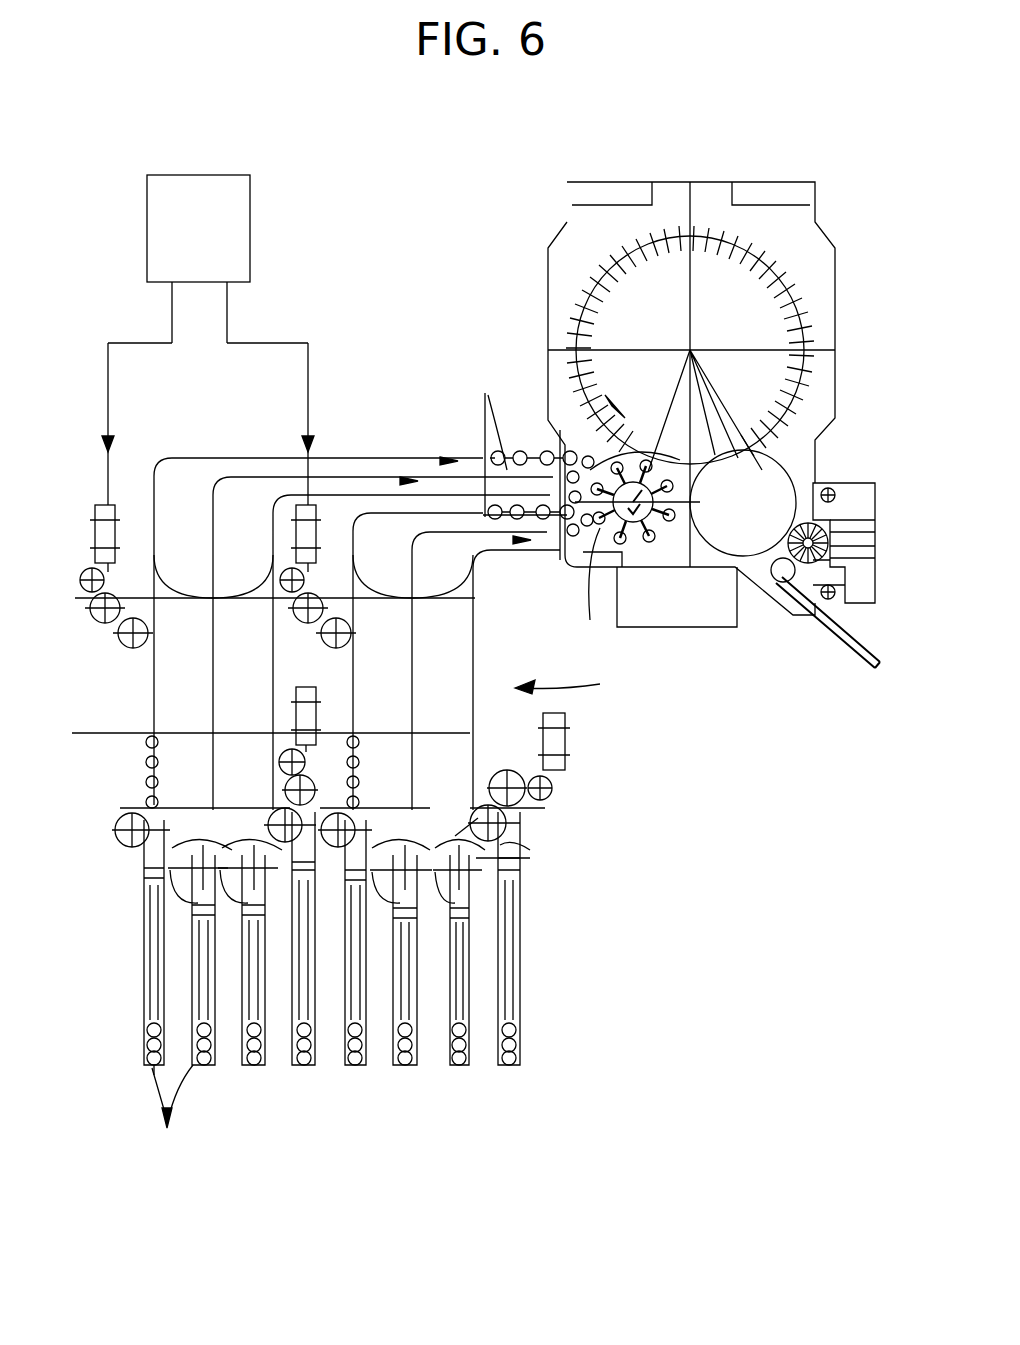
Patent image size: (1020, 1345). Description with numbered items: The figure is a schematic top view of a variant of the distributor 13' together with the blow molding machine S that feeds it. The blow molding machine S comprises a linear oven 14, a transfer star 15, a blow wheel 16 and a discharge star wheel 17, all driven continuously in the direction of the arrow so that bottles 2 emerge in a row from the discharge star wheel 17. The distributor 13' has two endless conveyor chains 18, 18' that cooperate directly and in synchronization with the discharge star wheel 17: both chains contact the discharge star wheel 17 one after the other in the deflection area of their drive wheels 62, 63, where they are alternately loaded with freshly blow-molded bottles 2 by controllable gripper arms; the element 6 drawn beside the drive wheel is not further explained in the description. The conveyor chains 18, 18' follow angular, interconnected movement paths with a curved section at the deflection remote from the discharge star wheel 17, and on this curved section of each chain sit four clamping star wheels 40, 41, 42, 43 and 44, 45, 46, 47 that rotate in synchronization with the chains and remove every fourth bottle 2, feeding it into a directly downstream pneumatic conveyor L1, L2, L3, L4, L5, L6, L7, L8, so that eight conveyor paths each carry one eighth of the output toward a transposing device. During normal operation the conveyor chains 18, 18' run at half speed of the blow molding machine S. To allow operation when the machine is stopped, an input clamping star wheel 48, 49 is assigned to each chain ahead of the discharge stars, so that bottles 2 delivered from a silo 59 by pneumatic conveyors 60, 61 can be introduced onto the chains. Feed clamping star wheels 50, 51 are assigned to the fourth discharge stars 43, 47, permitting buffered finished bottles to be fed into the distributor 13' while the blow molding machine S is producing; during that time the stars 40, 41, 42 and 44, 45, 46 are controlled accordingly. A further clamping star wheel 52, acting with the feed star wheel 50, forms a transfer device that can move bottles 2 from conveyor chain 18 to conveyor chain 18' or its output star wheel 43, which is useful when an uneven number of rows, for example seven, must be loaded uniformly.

The blow molding machine S is at (824, 156).
The bottles 2 is at (485, 430).
The rotor 6 is at (587, 589).
The distributor 13' is at (576, 684).
The linear oven 14 is at (842, 603).
The transfer star 15 is at (810, 455).
The blow wheel 16 is at (658, 236).
The discharge star wheel 17 is at (643, 567).
The conveyor chain 18 is at (316, 633).
The conveyor chain 18' is at (272, 632).
The clamping star wheel 40 is at (116, 840).
The clamping star wheel 41 is at (180, 880).
The clamping star wheel 42 is at (215, 915).
The clamping star wheel 43 is at (272, 812).
The clamping star wheel 44 is at (460, 820).
The clamping star wheel 45 is at (395, 908).
The clamping star wheel 46 is at (440, 905).
The clamping star wheel 47 is at (527, 857).
The input clamping star wheel 48 is at (135, 648).
The input clamping star wheel 49 is at (338, 646).
The feed clamping star wheel 50 is at (290, 782).
The feed clamping star wheel 51 is at (507, 770).
The clamping star wheel 52 is at (330, 742).
The silo 59 is at (172, 195).
The pneumatic conveyor 60 is at (108, 400).
The pneumatic conveyor 61 is at (308, 392).
The drive wheel 62 is at (560, 536).
The drive wheel 63 is at (548, 456).
The pneumatic conveyor L1 is at (140, 1065).
The pneumatic conveyor L2 is at (203, 1065).
The pneumatic conveyor L3 is at (255, 1065).
The pneumatic conveyor L4 is at (307, 1065).
The pneumatic conveyor L5 is at (355, 1065).
The pneumatic conveyor L6 is at (405, 1065).
The pneumatic conveyor L7 is at (459, 1065).
The pneumatic conveyor L8 is at (509, 1065).